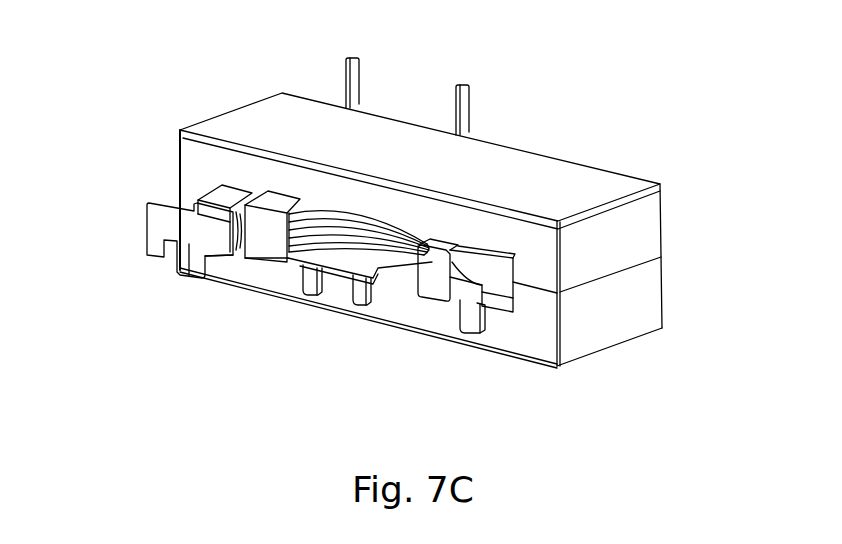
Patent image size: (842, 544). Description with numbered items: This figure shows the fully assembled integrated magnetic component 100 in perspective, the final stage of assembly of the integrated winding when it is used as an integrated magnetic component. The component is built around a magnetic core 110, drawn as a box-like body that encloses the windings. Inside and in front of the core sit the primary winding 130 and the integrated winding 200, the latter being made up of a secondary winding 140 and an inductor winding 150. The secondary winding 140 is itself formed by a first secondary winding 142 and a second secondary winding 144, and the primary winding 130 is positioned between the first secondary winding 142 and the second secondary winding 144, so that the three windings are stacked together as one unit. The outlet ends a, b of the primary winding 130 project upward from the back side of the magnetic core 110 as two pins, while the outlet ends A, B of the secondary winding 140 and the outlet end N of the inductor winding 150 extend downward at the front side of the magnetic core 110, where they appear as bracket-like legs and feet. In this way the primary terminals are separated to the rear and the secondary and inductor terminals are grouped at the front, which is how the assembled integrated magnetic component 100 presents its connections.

The integrated magnetic component 100 is at (72, 26).
The magnetic core 110 is at (662, 230).
The primary winding 130 is at (300, 248).
The secondary winding 140 is at (108, 70).
The first secondary winding 142 is at (210, 196).
The second secondary winding 144 is at (247, 232).
The inductor winding 150 is at (483, 250).
The integrated winding 200 is at (428, 320).
The outlet end of the primary winding a is at (354, 69).
The outlet end of the primary winding b is at (462, 94).
The outlet end of the secondary winding A is at (150, 258).
The outlet end of the secondary winding B is at (362, 306).
The outlet end of the inductor winding N is at (467, 327).